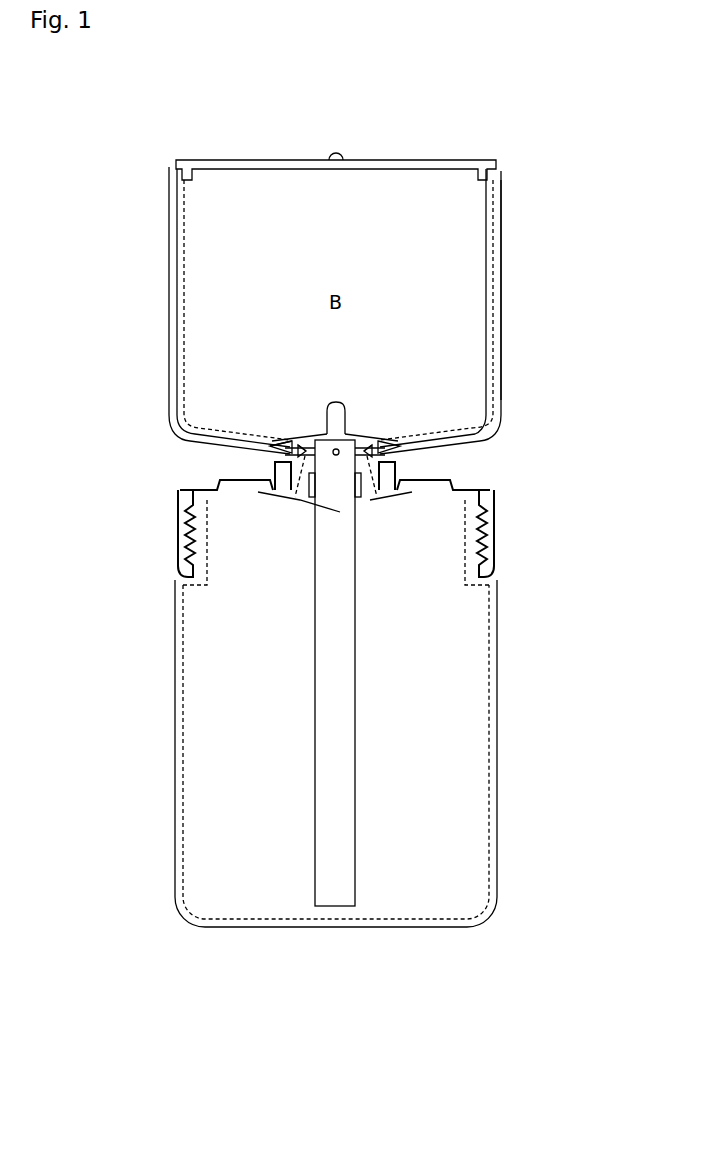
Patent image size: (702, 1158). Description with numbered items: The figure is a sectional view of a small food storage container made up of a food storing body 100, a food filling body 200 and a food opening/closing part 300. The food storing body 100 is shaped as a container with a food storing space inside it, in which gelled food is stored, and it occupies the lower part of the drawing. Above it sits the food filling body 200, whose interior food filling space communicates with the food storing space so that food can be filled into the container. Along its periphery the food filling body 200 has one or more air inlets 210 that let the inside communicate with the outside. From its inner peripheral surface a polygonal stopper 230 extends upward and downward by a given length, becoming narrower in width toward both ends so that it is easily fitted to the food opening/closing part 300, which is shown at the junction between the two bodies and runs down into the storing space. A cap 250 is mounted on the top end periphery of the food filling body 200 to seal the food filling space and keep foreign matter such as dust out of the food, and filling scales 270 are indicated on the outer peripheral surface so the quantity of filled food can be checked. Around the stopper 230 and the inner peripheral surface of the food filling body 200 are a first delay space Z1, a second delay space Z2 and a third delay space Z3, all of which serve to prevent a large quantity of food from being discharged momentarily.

The food storing body 100 is at (148, 878).
The food filling body 200 is at (138, 140).
The air inlet 210 is at (270, 467).
The polygonal stopper 230 is at (375, 470).
The cap 250 is at (353, 165).
The filling scales 270 is at (498, 208).
The food opening/closing part 300 is at (318, 385).
The first delay space Z1 is at (368, 435).
The second delay space Z2 is at (293, 438).
The third delay space Z3 is at (265, 450).